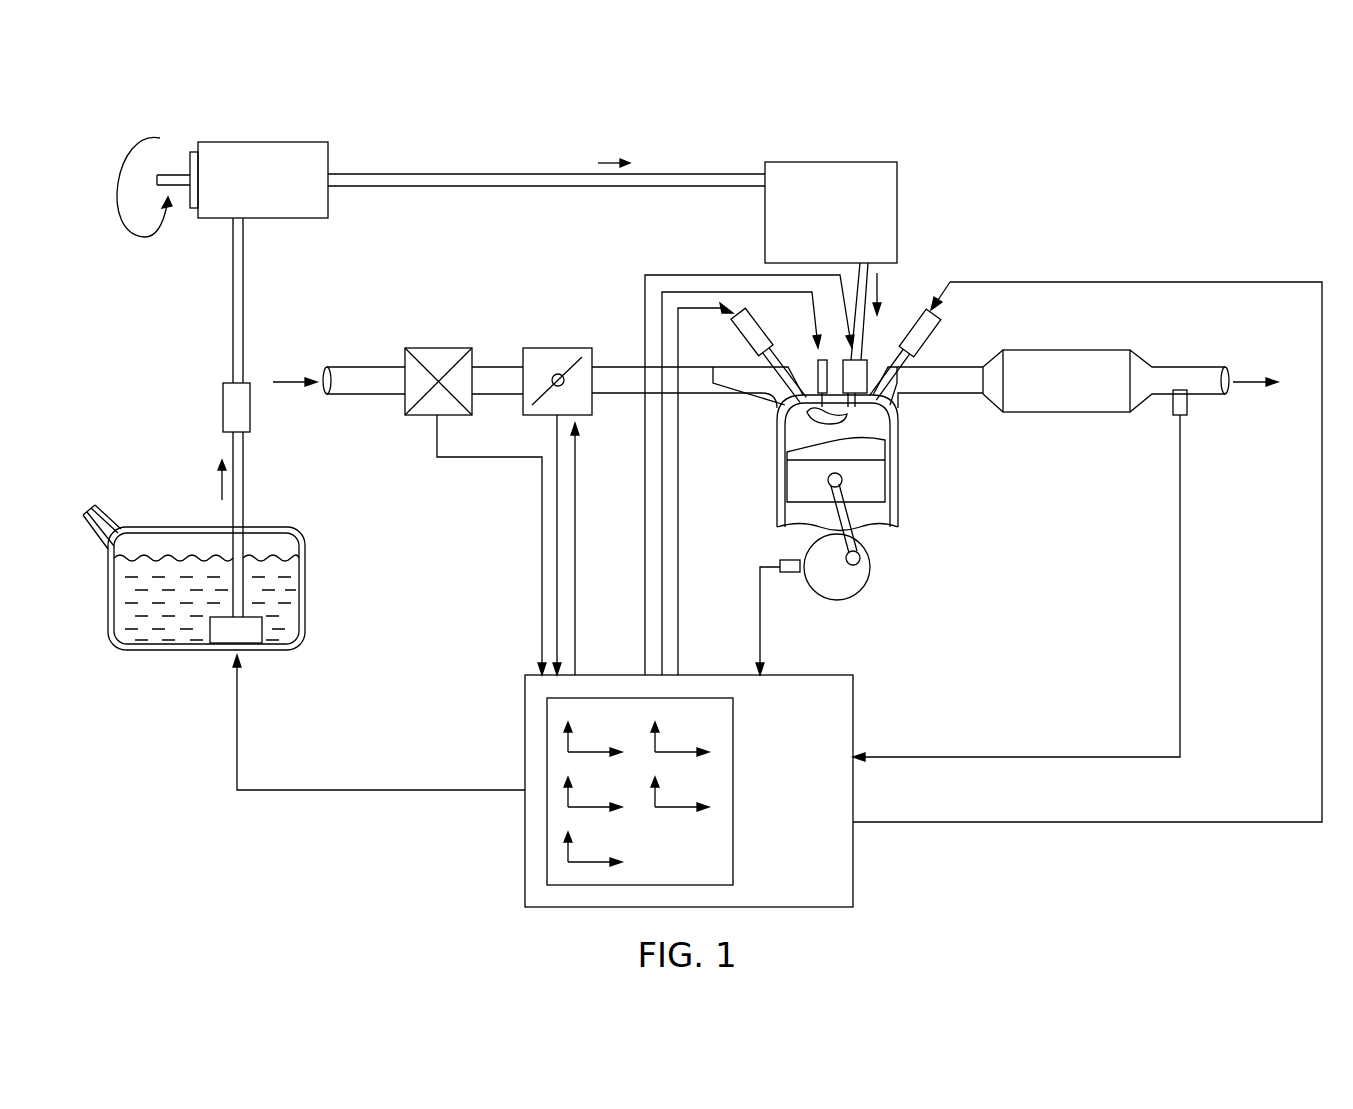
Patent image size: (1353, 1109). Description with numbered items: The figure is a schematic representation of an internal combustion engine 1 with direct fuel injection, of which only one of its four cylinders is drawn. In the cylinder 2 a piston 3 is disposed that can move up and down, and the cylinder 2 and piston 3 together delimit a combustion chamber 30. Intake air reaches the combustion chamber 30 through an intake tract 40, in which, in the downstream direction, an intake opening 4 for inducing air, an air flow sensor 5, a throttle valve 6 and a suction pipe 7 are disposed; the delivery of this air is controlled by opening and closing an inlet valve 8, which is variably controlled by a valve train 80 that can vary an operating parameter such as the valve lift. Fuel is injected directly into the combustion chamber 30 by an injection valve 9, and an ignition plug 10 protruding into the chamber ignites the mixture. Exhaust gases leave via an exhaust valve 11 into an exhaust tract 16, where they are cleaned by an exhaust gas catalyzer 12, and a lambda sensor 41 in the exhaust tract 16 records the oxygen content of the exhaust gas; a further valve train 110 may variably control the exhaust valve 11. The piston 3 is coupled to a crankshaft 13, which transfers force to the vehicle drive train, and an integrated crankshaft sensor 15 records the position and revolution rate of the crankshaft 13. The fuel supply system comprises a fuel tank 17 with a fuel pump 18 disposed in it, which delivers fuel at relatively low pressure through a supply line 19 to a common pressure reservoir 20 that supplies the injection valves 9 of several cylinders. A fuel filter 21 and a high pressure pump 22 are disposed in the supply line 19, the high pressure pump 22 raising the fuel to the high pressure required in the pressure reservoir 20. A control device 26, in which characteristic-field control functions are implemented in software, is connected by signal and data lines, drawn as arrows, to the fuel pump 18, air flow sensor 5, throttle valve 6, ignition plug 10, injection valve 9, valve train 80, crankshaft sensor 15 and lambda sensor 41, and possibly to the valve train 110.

The internal combustion engine 1 is at (992, 254).
The cylinder 2 is at (897, 507).
The piston 3 is at (870, 473).
The intake opening 4 is at (292, 378).
The air flow sensor 5 is at (437, 348).
The throttle valve 6 is at (555, 348).
The suction pipe 7 is at (620, 367).
The inlet valve 8 is at (752, 360).
The injection valve 9 is at (868, 375).
The ignition plug 10 is at (817, 377).
The exhaust valve 11 is at (932, 356).
The exhaust gas catalyzer 12 is at (1068, 350).
The crankshaft 13 is at (870, 573).
The crankshaft sensor 15 is at (790, 573).
The exhaust tract 16 is at (977, 411).
The fuel tank 17 is at (153, 650).
The fuel pump 18 is at (223, 645).
The supply line 19 is at (437, 174).
The pressure reservoir 20 is at (832, 162).
The fuel filter 21 is at (222, 407).
The high pressure pump 22 is at (264, 142).
The control device 26 is at (853, 862).
The combustion chamber 30 is at (797, 433).
The intake tract 40 is at (363, 350).
The lambda sensor 41 is at (1190, 405).
The valve train 80 is at (759, 322).
The valve train 110 is at (943, 322).